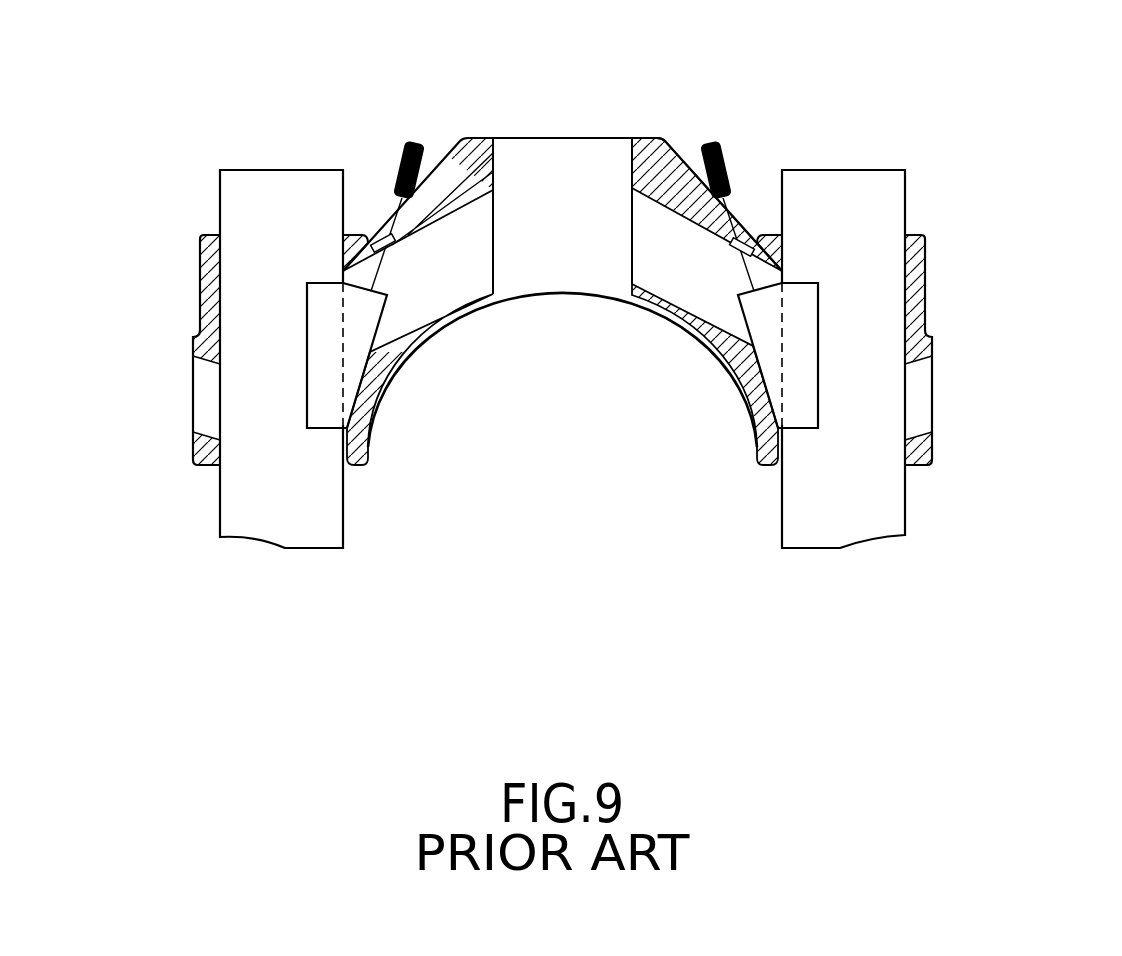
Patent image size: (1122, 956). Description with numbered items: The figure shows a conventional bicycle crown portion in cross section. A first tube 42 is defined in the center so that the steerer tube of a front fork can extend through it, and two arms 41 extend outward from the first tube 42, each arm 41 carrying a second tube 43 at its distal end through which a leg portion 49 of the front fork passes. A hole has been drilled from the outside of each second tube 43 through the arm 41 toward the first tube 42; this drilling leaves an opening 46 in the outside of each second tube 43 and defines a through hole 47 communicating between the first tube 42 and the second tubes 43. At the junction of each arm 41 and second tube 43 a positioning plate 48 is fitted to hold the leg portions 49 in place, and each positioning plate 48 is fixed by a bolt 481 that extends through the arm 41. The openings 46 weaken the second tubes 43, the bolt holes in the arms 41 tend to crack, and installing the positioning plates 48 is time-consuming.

The arm 41 is at (720, 350).
The first tube 42 is at (566, 192).
The second tube 43 is at (927, 263).
The opening 46 is at (908, 385).
The through hole 47 is at (668, 263).
The positioning plate 48 is at (750, 413).
The leg portion 49 is at (872, 497).
The bolt 481 is at (724, 153).